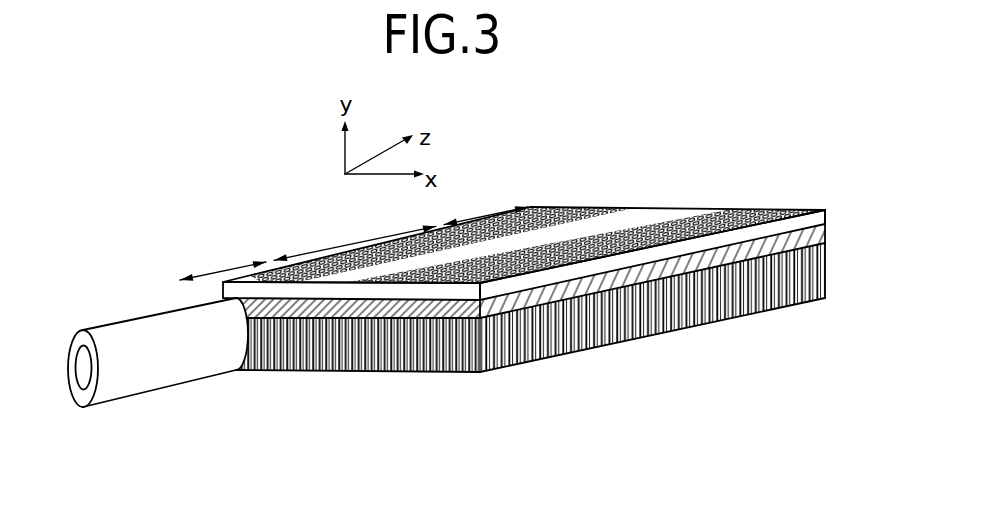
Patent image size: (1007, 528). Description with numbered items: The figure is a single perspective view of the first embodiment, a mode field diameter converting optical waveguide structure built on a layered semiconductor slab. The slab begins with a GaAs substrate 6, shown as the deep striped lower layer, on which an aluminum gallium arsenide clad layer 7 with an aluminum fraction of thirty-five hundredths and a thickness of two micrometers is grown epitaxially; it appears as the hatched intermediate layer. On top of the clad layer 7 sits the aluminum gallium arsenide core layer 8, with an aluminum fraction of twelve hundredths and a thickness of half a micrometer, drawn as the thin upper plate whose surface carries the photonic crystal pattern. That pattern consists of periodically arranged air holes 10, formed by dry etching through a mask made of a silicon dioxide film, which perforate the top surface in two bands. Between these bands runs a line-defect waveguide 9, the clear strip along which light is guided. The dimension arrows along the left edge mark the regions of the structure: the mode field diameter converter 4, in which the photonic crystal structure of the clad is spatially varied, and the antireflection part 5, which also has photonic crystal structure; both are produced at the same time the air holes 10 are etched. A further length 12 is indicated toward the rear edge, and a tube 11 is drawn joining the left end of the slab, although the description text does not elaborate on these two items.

The mode field diameter converter 4 is at (340, 247).
The antireflection part 5 is at (212, 274).
The GaAs substrate 6 is at (322, 337).
The clad layer 7 is at (532, 336).
The core layer 8 is at (524, 277).
The line-defect waveguide 9 is at (563, 237).
The air holes 10 is at (577, 262).
The tube 11 is at (183, 362).
The rear margin length 12 is at (504, 212).